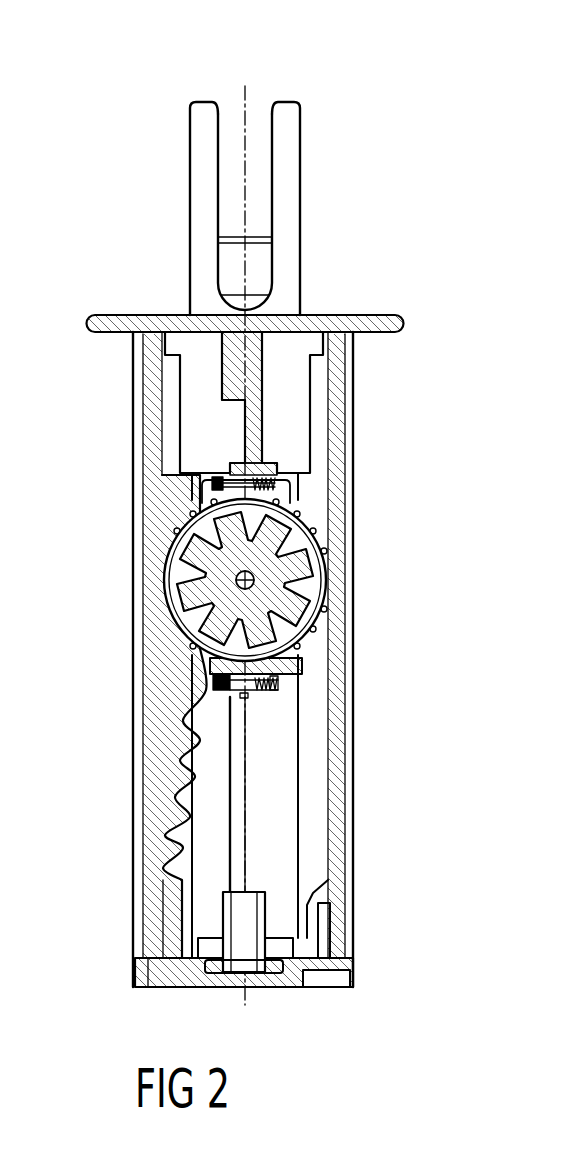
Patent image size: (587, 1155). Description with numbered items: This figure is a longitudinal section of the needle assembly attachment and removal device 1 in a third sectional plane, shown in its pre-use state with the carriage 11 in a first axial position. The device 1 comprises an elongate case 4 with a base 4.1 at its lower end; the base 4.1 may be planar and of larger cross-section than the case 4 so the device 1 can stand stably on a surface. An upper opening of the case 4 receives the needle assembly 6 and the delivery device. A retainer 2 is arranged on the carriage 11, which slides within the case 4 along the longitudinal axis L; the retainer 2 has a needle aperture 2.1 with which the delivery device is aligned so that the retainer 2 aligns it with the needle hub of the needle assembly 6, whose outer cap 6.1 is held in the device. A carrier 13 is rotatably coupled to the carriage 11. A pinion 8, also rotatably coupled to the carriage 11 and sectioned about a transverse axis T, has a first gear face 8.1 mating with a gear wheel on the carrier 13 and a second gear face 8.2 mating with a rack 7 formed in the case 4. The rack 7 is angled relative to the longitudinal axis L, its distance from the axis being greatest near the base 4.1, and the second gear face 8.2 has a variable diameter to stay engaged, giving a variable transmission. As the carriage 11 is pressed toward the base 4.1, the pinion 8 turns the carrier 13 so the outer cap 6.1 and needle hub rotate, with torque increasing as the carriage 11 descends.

The needle assembly attachment and removal device 1 is at (115, 773).
The retainer 2 is at (203, 215).
The needle aperture 2.1 is at (257, 137).
The elongate case 4 is at (337, 845).
The base 4.1 is at (163, 973).
The needle assembly 6 is at (263, 277).
The outer cap 6.1 is at (263, 277).
The rack 7 is at (177, 813).
The pinion 8 is at (197, 643).
The first gear face 8.1 is at (313, 520).
The second gear face 8.2 is at (163, 567).
The carriage 11 is at (257, 437).
The carrier 13 is at (198, 408).
The longitudinal axis L is at (245, 526).
The transverse axis T is at (253, 579).